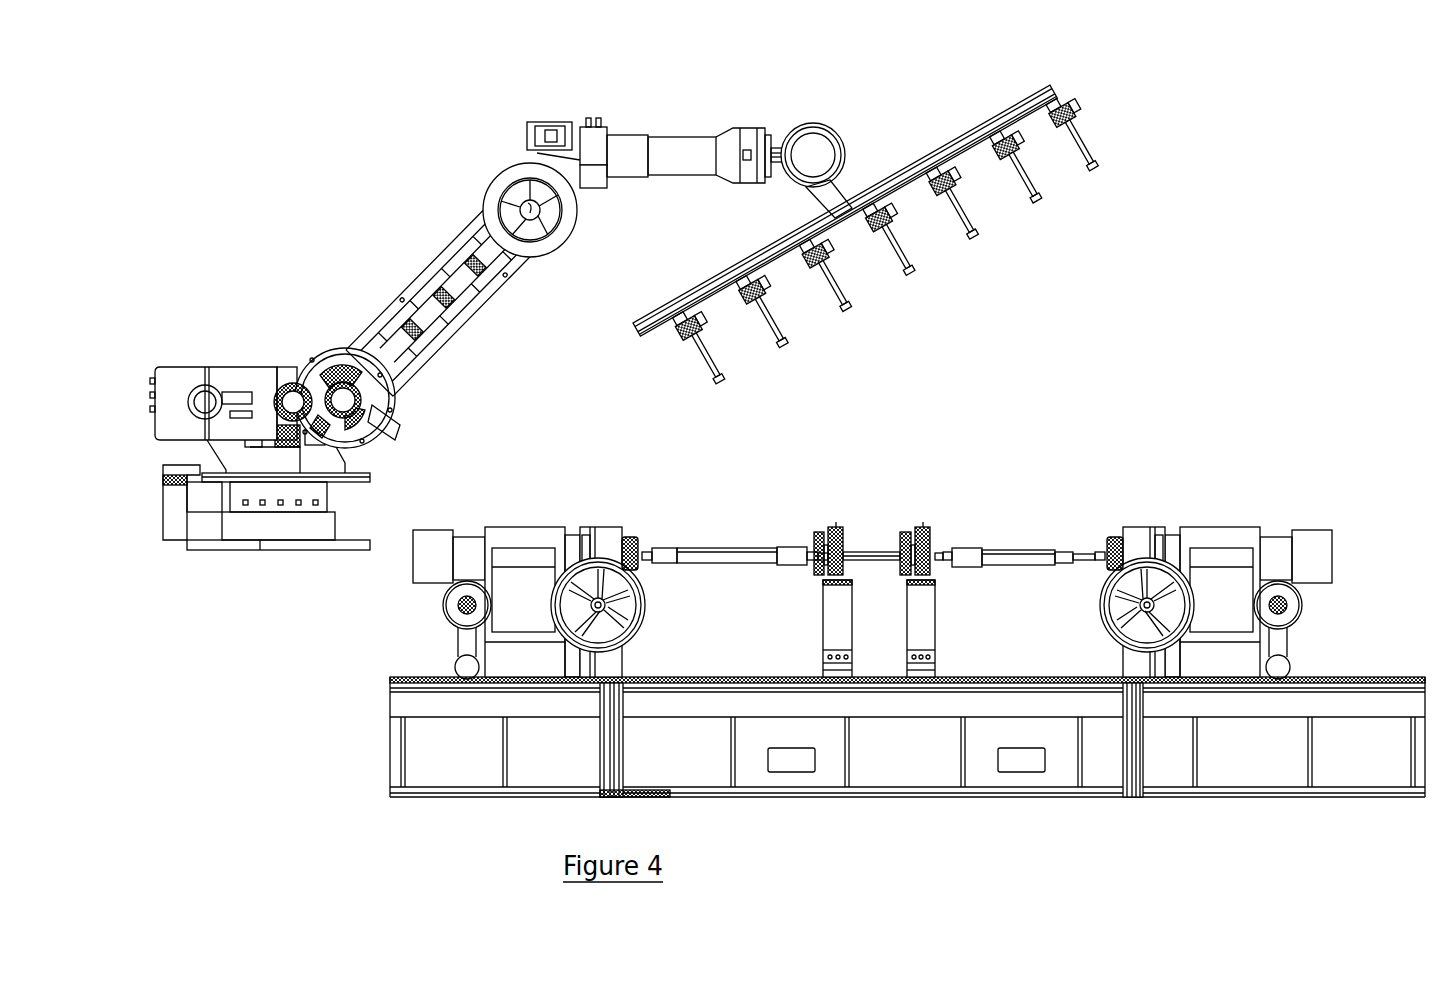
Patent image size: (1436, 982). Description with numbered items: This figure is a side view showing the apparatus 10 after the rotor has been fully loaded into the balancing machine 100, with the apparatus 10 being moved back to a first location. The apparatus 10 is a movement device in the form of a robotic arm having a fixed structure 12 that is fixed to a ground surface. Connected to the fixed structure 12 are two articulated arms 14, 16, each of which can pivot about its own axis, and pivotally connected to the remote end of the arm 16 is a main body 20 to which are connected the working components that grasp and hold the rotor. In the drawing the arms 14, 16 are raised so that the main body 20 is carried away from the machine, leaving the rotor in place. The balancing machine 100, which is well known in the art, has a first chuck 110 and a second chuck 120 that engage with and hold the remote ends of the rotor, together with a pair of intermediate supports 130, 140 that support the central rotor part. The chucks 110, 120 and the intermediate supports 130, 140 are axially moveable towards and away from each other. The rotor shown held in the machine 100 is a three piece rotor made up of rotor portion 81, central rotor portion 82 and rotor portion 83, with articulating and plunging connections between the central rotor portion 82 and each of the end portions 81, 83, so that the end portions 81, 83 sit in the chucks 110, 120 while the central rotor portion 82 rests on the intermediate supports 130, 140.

The apparatus 10 is at (871, 231).
The fixed structure 12 is at (228, 366).
The articulated arm 14 is at (412, 267).
The articulated arm 16 is at (678, 142).
The main body 20 is at (963, 135).
The rotor portion 81 is at (735, 547).
The central rotor portion 82 is at (880, 552).
The rotor portion 83 is at (1015, 552).
The balancing machine 100 is at (907, 770).
The first mounting apparatus or chuck 110 is at (633, 532).
The second mounting apparatus or chuck 120 is at (1116, 533).
The intermediate support 130 is at (822, 610).
The intermediate support 140 is at (928, 608).